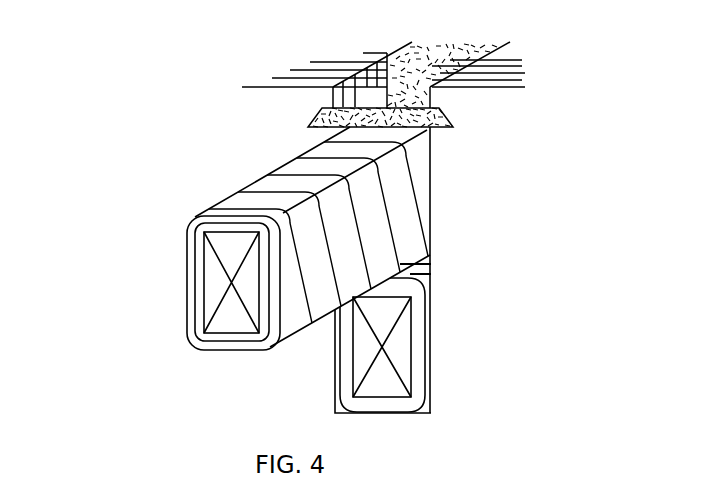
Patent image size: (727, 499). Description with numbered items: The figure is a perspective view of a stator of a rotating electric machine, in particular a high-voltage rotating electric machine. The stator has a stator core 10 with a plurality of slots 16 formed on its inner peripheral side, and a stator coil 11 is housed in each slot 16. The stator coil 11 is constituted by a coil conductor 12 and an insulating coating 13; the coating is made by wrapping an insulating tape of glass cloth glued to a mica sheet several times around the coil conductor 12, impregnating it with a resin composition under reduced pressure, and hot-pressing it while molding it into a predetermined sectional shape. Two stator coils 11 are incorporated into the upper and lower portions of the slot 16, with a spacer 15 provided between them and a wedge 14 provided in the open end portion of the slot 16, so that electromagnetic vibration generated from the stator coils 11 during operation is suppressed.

The stator core 10 is at (285, 108).
The stator coil 11 is at (82, 165).
The coil conductor 12 is at (216, 282).
The insulating coating 13 is at (226, 222).
The wedge 14 is at (437, 122).
The spacer 15 is at (430, 265).
The slot 16 is at (432, 413).